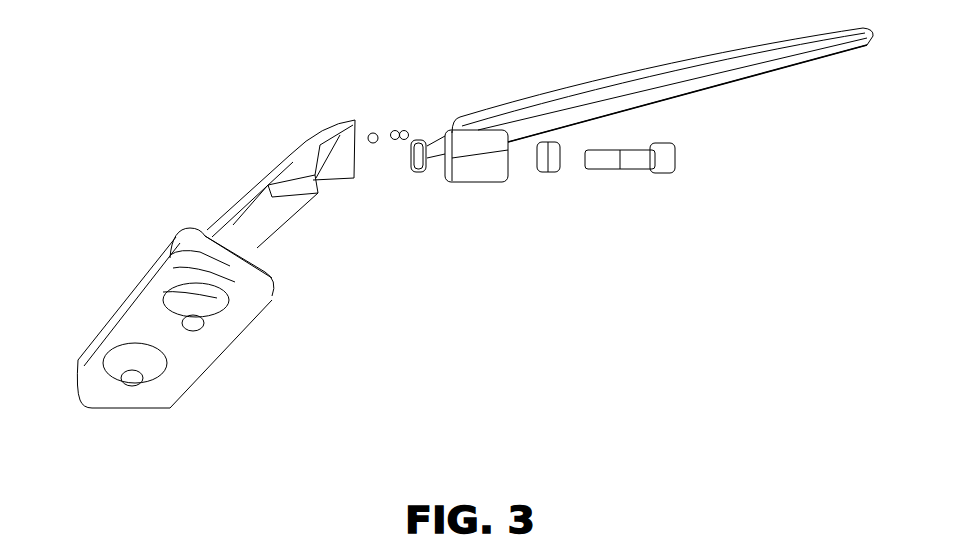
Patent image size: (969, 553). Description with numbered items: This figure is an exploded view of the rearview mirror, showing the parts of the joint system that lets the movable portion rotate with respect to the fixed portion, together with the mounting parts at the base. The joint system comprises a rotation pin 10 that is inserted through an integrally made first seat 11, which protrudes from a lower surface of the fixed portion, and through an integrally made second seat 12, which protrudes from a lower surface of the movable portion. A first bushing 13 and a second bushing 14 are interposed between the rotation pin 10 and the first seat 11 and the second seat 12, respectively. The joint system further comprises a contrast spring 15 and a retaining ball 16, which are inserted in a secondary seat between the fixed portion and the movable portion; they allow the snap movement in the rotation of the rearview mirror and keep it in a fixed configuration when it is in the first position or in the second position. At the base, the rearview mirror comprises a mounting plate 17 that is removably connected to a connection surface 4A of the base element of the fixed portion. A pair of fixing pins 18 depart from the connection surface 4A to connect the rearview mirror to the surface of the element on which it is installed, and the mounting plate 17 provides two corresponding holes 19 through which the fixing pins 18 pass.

The rotation pin 10 is at (643, 167).
The first seat 11 is at (458, 175).
The second seat 12 is at (350, 174).
The first bushing 13 is at (555, 167).
The second bushing 14 is at (425, 165).
The contrast spring 15 is at (403, 131).
The retaining ball 16 is at (372, 133).
The mounting plate 17 is at (127, 397).
The fixing pins 18 is at (118, 366).
The holes 19 is at (223, 307).
The connection surface 4A is at (255, 273).